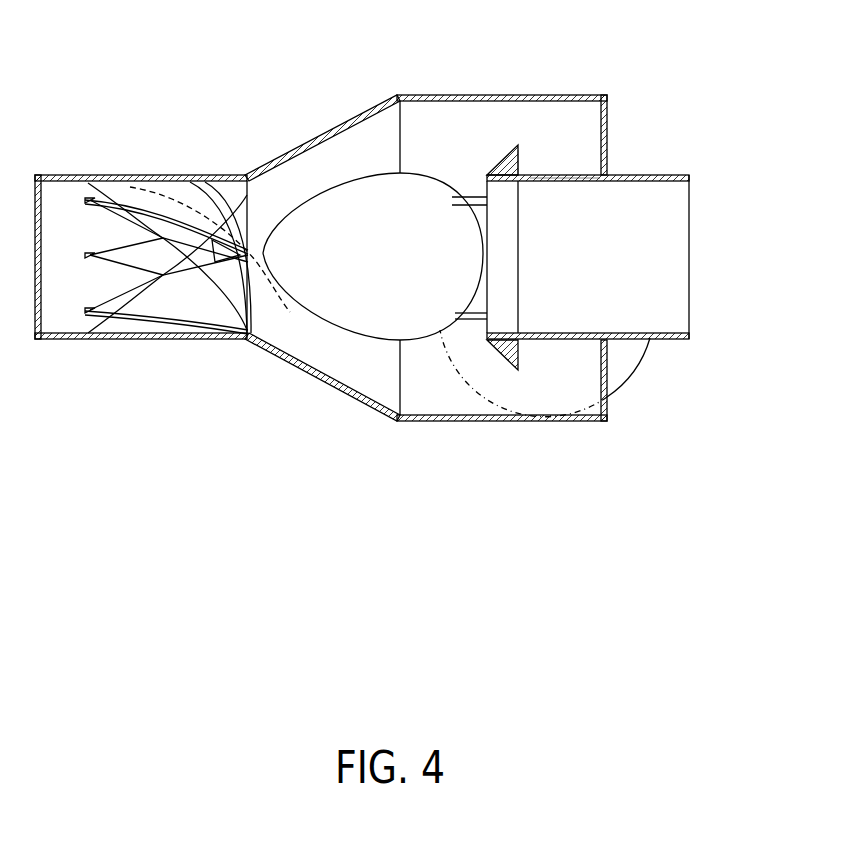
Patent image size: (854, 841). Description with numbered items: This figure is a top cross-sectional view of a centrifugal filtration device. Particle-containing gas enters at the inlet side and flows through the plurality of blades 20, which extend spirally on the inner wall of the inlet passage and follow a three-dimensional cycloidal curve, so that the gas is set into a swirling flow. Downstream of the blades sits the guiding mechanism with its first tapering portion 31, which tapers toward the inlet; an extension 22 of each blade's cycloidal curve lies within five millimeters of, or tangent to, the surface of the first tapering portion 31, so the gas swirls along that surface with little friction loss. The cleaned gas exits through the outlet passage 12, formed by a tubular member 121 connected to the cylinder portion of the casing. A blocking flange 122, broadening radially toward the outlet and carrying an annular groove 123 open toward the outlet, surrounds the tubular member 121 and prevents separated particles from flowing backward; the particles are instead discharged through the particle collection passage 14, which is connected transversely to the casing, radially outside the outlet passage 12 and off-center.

The outlet passage 12 is at (667, 251).
The tubular member 121 is at (557, 173).
The blocking flange 122 is at (500, 165).
The annular groove 123 is at (515, 162).
The particle collection passage 14 is at (550, 402).
The blades 20 is at (170, 315).
The extension of cycloidal curve 22 is at (290, 315).
The first tapering portion 31 is at (303, 203).